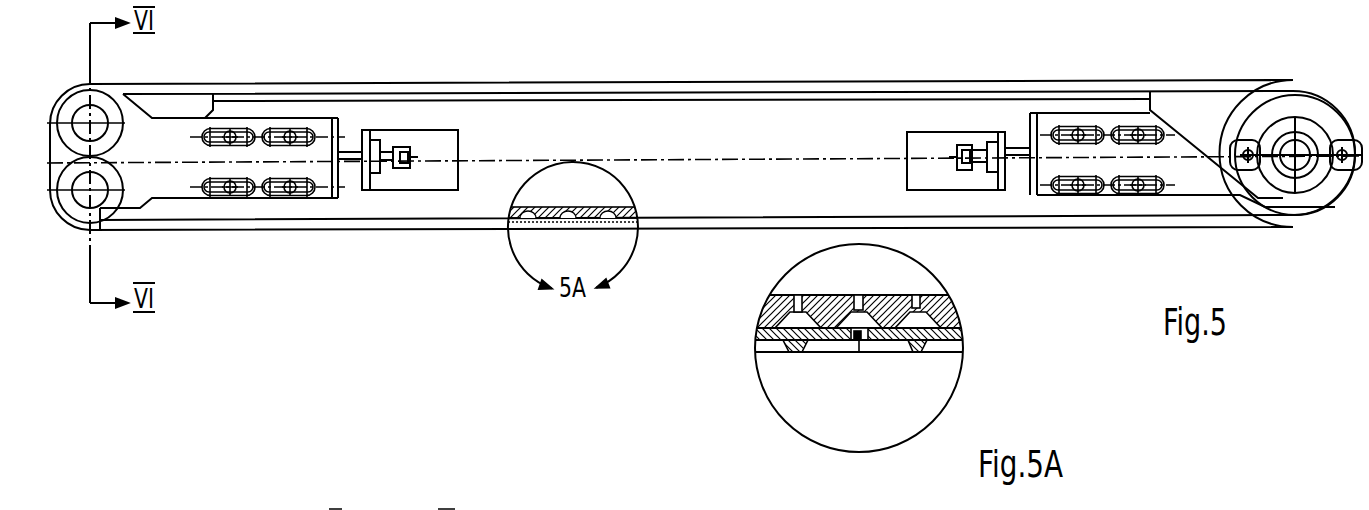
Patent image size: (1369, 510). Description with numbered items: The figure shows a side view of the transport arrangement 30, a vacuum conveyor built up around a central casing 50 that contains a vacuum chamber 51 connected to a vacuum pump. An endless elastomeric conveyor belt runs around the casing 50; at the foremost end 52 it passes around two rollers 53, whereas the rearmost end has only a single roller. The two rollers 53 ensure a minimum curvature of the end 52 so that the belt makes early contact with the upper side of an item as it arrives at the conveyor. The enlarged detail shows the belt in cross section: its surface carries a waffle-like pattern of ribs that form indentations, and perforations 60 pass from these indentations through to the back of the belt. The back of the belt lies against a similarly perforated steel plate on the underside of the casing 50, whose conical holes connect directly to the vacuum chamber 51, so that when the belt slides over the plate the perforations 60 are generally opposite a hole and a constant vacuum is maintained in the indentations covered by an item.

In FIG. 5, the transport arrangement 30 is at (648, 509).
In FIG. 5, the central casing 50 is at (778, 171).
In FIG. 5A, the vacuum chamber 51 is at (905, 273).
In FIG. 5, the foremost end 52 is at (70, 246).
In FIG. 5, the rollers 53 is at (100, 185).
In FIG. 5A, the perforations 60 is at (862, 340).